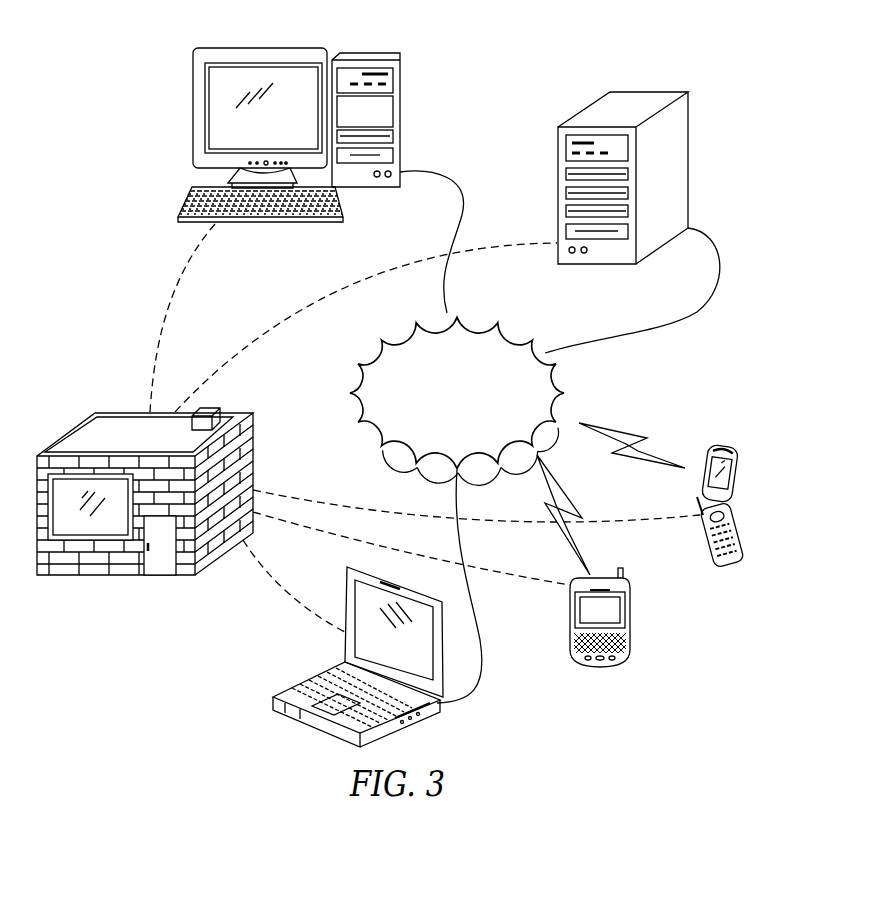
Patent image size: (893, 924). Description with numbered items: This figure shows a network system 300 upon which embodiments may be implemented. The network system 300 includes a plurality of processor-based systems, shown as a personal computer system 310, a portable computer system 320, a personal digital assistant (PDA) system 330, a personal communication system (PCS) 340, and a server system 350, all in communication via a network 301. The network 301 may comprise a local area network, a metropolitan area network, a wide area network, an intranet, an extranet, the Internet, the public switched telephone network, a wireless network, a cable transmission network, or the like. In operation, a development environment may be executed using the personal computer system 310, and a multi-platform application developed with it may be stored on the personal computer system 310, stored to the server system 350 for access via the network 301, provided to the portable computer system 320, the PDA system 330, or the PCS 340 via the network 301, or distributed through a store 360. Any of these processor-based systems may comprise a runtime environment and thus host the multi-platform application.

The network system 300 is at (586, 62).
The network 301 is at (474, 404).
The personal computer system 310 is at (402, 98).
The portable computer system 320 is at (392, 728).
The personal digital assistant (PDA) system 330 is at (628, 620).
The personal communication system (PCS) 340 is at (700, 542).
The server system 350 is at (690, 137).
The store 360 is at (257, 443).